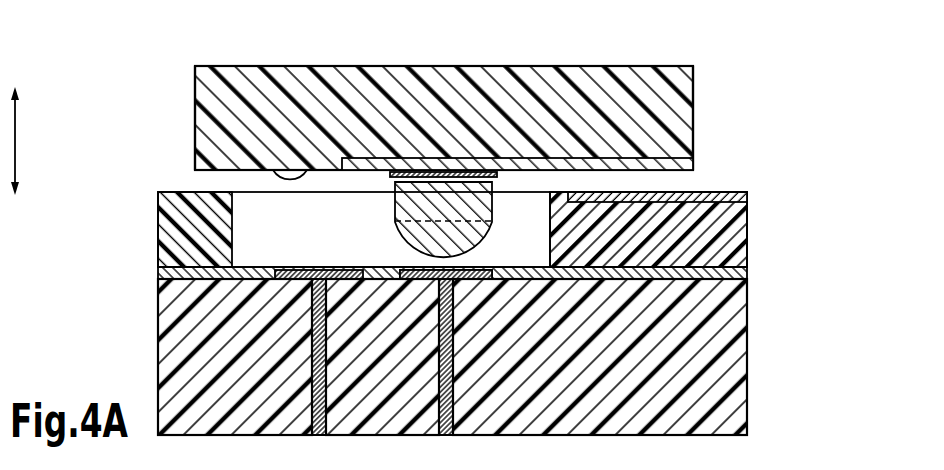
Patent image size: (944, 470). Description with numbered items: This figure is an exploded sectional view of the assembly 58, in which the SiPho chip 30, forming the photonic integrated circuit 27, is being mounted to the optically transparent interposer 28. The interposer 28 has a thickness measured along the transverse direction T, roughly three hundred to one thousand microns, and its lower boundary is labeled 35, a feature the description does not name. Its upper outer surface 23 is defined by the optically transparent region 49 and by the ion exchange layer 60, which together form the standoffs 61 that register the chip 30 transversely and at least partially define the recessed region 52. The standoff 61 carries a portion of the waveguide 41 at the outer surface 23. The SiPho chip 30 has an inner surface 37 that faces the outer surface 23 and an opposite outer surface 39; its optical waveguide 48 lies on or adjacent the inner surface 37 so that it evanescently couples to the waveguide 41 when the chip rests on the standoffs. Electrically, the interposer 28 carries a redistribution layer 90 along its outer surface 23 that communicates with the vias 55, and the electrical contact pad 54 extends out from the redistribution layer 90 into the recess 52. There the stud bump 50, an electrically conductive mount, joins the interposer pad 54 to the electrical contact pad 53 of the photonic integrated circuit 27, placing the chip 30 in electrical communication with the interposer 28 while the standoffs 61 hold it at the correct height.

The assembly 58 is at (130, 52).
The photonic integrated circuit 27 is at (330, 66).
The SiPho chip 30 is at (403, 66).
The electrical contact pad 53 is at (445, 172).
The outer surface 39 is at (483, 160).
The stud bump 50 is at (473, 256).
The optical waveguide 48 is at (638, 160).
The inner surface 37 is at (195, 88).
The electrical contact pad 54 is at (427, 265).
The outer surface 23 is at (158, 192).
The standoff 61 is at (158, 213).
The recessed region 52 is at (263, 241).
The redistribution layer 90 is at (158, 275).
The via 55 is at (312, 358).
The waveguide 41 is at (708, 193).
The ion exchange layer 60 is at (748, 193).
The optically transparent region 49 is at (747, 224).
The optically transparent interposer 28 is at (747, 333).
The bottom surface of substrate 35 is at (747, 382).
The transverse direction T is at (23, 141).